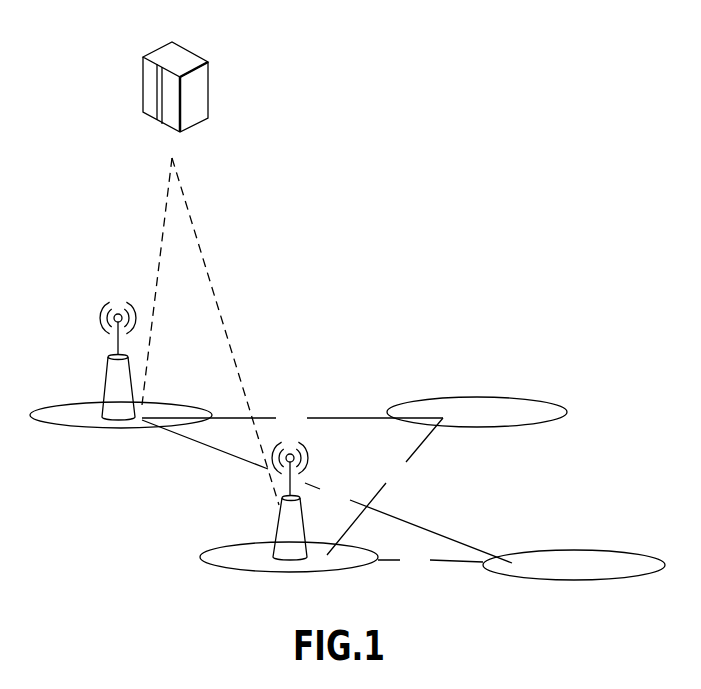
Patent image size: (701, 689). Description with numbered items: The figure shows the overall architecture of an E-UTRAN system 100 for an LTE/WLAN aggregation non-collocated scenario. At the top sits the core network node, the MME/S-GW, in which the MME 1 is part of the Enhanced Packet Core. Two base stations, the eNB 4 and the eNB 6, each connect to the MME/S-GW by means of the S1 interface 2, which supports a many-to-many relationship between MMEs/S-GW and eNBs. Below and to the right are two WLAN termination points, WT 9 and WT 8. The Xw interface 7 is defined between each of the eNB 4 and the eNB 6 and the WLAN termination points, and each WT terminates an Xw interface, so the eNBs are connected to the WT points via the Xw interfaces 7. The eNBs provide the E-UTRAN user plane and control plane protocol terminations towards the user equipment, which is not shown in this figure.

The MME 1 is at (172, 40).
The S1 interface 2 is at (150, 265).
The eNB 4 is at (110, 387).
The eNB 6 is at (285, 535).
The Xw interface 7 is at (418, 568).
The WT 8 is at (632, 562).
The WT 9 is at (547, 410).
The E-UTRAN system 100 is at (530, 134).